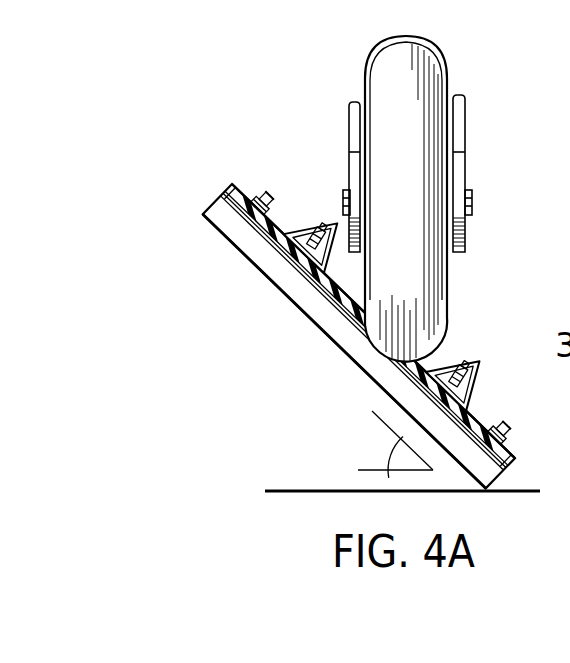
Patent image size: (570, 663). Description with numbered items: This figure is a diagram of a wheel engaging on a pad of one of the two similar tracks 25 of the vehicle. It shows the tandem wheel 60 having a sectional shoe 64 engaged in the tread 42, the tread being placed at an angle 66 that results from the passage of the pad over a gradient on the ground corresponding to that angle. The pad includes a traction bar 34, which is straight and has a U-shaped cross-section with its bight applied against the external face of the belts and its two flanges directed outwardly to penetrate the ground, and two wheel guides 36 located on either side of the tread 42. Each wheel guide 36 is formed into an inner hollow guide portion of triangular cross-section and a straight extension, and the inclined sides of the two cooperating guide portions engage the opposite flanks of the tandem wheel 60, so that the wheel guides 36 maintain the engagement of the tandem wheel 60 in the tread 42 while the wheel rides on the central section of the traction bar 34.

The traction bar 34 is at (285, 380).
The tread 42 is at (300, 297).
The tandem wheel 60 is at (354, 293).
The sectional shoe 64 is at (408, 349).
The angle 66 is at (391, 441).
The wheel guide 36 is at (427, 296).
The track 25 is at (455, 386).